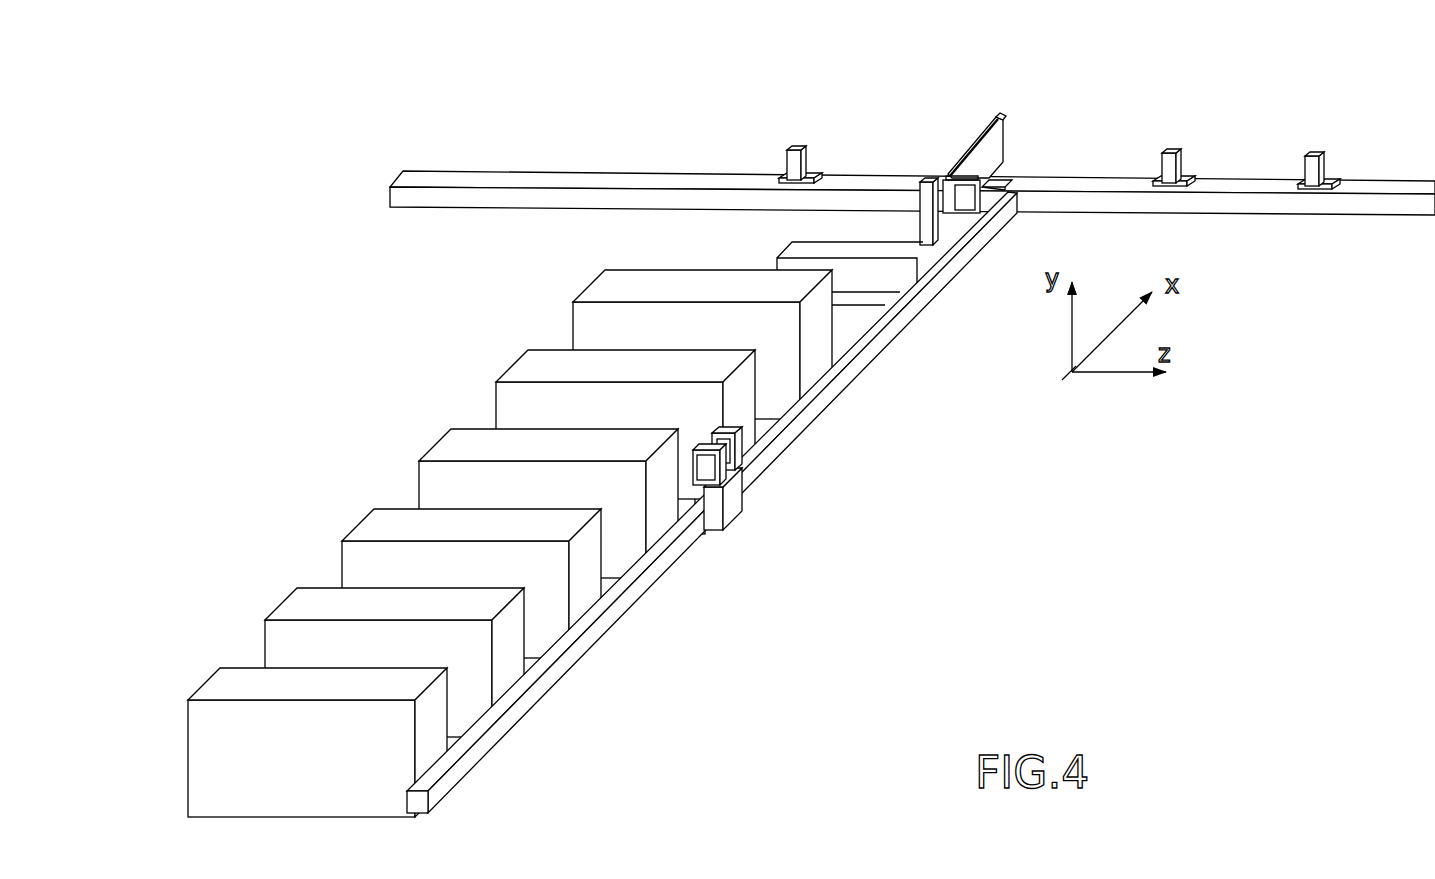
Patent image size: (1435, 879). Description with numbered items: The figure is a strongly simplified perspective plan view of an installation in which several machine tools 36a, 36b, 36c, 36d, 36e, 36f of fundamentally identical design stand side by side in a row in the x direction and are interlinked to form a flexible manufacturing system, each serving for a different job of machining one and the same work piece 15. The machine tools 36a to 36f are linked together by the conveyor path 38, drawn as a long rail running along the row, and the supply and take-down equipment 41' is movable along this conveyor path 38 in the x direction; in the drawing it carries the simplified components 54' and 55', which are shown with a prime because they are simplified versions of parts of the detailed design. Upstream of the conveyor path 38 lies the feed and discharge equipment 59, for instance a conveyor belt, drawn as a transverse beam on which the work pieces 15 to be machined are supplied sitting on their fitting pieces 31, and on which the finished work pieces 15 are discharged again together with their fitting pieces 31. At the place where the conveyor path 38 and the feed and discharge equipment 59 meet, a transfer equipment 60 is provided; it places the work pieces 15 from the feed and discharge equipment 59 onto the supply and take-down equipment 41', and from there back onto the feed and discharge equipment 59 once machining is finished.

The feed and discharge equipment 59 is at (652, 176).
The work piece 15 is at (791, 149).
The fitting piece 31 is at (808, 178).
The transfer equipment 60 is at (960, 175).
The machine tool 36a is at (582, 290).
The machine tool 36b is at (510, 357).
The machine tool 36c is at (432, 437).
The machine tool 36d is at (360, 516).
The machine tool 36e is at (284, 594).
The machine tool 36f is at (208, 674).
The conveyor path 38 is at (480, 746).
The supply and take-down equipment 41' is at (757, 528).
The upper gripper bracket 54' is at (799, 449).
The sensor unit 55' is at (771, 488).